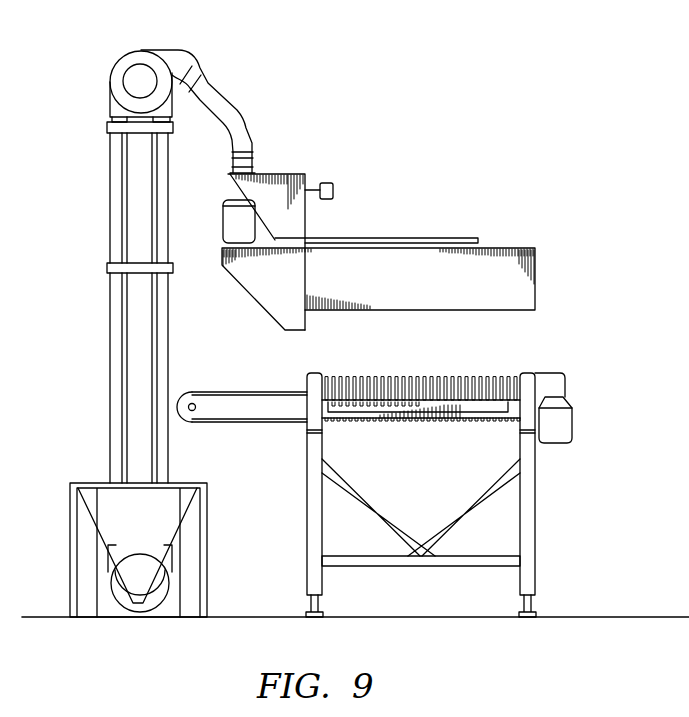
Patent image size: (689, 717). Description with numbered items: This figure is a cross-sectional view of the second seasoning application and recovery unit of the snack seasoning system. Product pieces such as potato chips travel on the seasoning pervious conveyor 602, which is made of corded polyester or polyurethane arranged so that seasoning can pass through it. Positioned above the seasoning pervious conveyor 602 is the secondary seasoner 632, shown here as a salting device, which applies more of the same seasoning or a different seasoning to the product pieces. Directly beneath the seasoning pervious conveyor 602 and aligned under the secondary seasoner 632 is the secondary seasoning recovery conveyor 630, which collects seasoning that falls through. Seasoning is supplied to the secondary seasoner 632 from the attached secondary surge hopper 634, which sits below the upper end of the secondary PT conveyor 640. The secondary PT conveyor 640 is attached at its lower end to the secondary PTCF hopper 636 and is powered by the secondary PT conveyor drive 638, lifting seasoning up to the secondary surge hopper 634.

The seasoning pervious conveyor 602 is at (484, 376).
The secondary seasoning recovery conveyor 630 is at (250, 424).
The secondary seasoner 632 is at (442, 288).
The secondary surge hopper 634 is at (288, 173).
The secondary PTCF hopper 636 is at (93, 482).
The secondary PT conveyor drive 638 is at (108, 597).
The secondary PT conveyor 640 is at (110, 207).